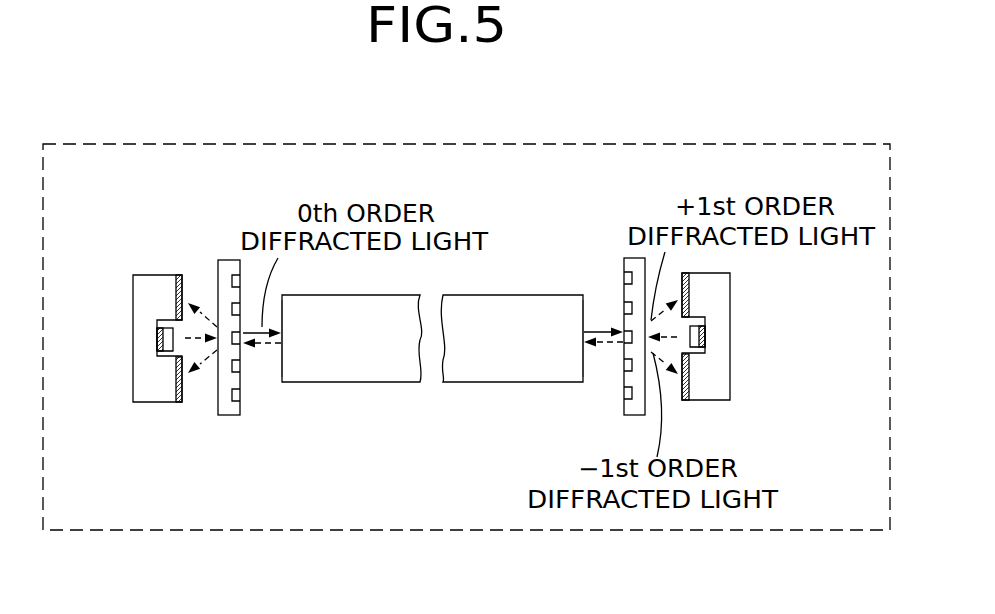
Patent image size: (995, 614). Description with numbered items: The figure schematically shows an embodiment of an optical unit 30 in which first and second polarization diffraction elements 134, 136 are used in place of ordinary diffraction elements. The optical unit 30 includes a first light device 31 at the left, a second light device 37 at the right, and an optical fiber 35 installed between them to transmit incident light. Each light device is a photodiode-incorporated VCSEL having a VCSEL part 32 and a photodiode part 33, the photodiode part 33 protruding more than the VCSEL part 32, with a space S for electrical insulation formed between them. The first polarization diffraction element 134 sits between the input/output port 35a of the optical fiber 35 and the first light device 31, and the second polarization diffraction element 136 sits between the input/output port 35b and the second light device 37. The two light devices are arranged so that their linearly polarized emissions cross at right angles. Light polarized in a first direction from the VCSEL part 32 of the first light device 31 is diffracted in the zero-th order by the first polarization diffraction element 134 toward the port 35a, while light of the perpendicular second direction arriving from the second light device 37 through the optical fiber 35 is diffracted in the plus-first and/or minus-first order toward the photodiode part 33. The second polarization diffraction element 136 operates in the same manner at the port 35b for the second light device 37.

The optical unit 30 is at (672, 142).
The first light device 31 is at (131, 409).
The VCSEL part 32 is at (168, 339).
The photodiode part 33 is at (153, 294).
The optical fiber 35 is at (523, 296).
The input/output port 35a is at (279, 372).
The input/output port 35b is at (583, 367).
The second light device 37 is at (734, 405).
The first polarization diffraction element 134 is at (219, 253).
The second polarization diffraction element 136 is at (620, 253).
The space S is at (170, 354).